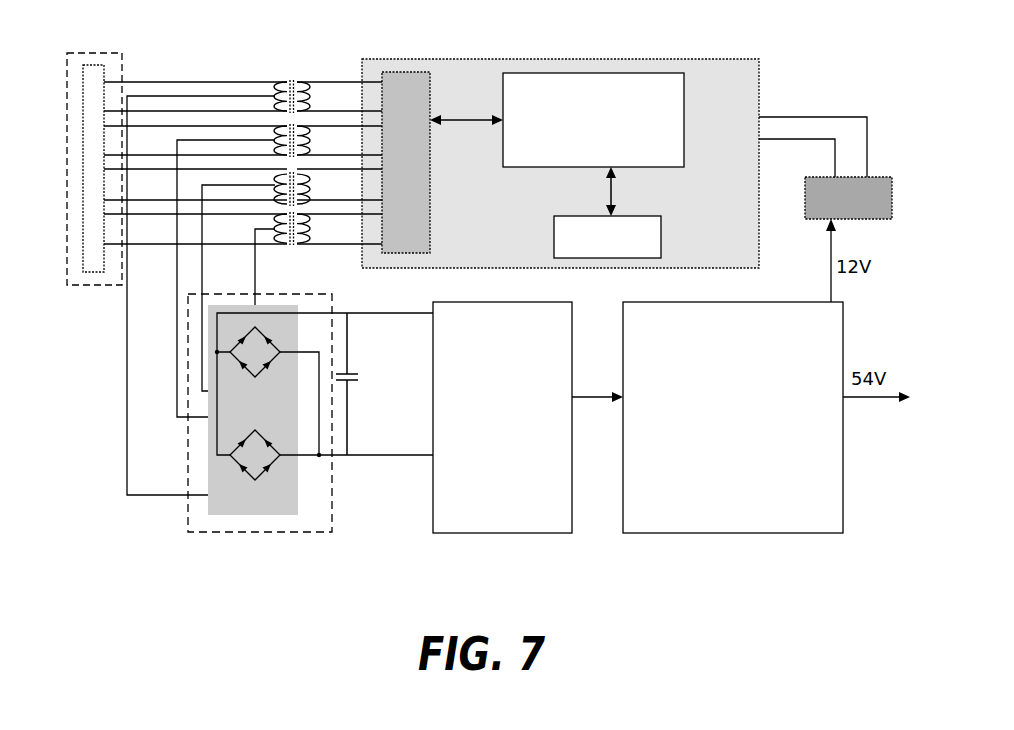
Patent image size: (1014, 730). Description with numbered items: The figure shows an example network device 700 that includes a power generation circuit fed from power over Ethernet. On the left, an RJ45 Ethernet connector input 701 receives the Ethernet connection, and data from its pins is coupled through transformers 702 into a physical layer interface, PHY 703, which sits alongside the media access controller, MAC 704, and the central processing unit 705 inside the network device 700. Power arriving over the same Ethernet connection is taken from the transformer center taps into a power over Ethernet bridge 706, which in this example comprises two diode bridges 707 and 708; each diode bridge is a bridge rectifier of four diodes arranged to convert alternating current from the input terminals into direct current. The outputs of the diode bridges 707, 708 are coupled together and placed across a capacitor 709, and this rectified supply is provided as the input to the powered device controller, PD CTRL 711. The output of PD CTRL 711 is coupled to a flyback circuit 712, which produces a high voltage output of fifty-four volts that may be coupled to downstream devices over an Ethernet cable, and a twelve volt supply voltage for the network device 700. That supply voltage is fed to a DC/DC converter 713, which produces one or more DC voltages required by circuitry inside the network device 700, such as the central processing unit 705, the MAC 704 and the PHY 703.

The network device 700 is at (623, 37).
The RJ45 Ethernet connector input 701 is at (89, 52).
The transformers 702 is at (288, 69).
The physical layer interface (PHY) 703 is at (395, 182).
The media access controller (MAC) 704 is at (582, 160).
The central processing unit 705 is at (559, 215).
The power over Ethernet bridge 706 is at (217, 536).
The diode bridge 707 is at (263, 388).
The diode bridge 708 is at (263, 433).
The capacitor 709 is at (357, 415).
The PD CTRL 711 is at (491, 472).
The flyback circuit 712 is at (721, 473).
The DC/DC converter 713 is at (818, 177).